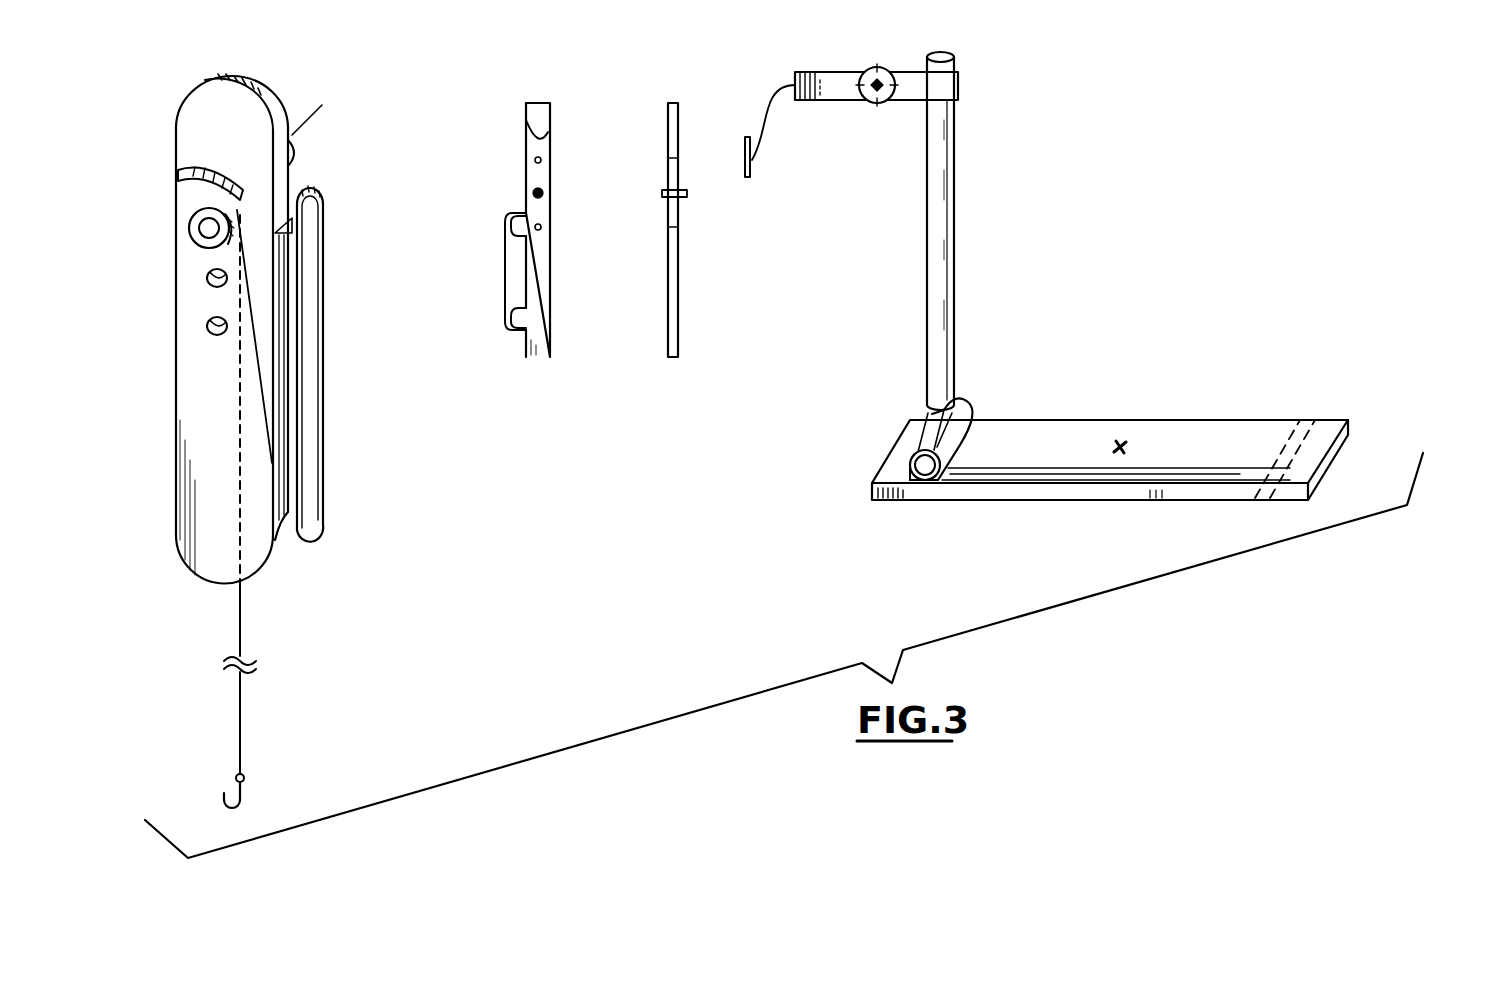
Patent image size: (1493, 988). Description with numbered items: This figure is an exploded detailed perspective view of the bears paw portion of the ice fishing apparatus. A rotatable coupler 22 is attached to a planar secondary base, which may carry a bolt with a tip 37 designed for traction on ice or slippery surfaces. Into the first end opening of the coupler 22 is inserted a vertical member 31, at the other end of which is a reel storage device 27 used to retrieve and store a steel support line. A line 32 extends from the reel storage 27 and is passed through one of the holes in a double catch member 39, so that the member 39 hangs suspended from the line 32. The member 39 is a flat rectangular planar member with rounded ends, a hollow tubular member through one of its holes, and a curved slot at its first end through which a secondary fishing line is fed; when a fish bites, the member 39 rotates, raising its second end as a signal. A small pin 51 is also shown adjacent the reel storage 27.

The rotatable coupler 22 is at (958, 400).
The reel storage device 27 is at (912, 83).
The vertical member 31 is at (943, 212).
The line 32 is at (237, 207).
The tip 37 is at (1300, 425).
The double catch member 39 is at (198, 368).
The pin 51 is at (753, 162).